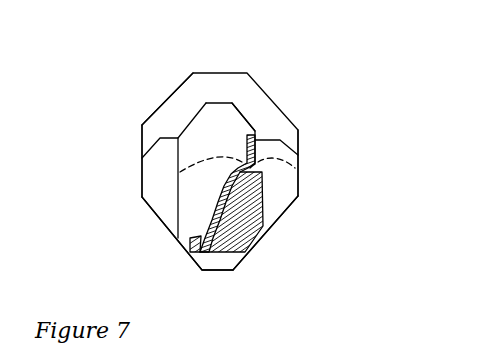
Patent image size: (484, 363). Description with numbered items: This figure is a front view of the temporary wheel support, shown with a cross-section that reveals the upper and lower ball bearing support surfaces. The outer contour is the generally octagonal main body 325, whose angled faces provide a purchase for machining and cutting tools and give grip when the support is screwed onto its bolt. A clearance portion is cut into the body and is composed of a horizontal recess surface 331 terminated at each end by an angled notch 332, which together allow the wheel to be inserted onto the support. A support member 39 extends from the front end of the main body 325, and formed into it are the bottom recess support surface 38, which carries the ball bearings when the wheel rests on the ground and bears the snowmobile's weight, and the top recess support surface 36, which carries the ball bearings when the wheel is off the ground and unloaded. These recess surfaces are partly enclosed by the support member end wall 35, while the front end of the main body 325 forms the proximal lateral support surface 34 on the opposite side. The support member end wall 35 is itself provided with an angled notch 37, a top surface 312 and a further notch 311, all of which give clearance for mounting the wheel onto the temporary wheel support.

The main body 325 is at (222, 68).
The horizontal recess surface 331 is at (175, 138).
The angled notch 332 is at (143, 139).
The top surface 312 is at (226, 103).
The notch 311 is at (245, 115).
The proximal lateral support surface 34 is at (140, 182).
The support member end wall 35 is at (220, 129).
The top recess support surface 36 is at (262, 165).
The angled notch 37 is at (207, 225).
The bottom recess support surface 38 is at (243, 252).
The support member 39 is at (263, 204).